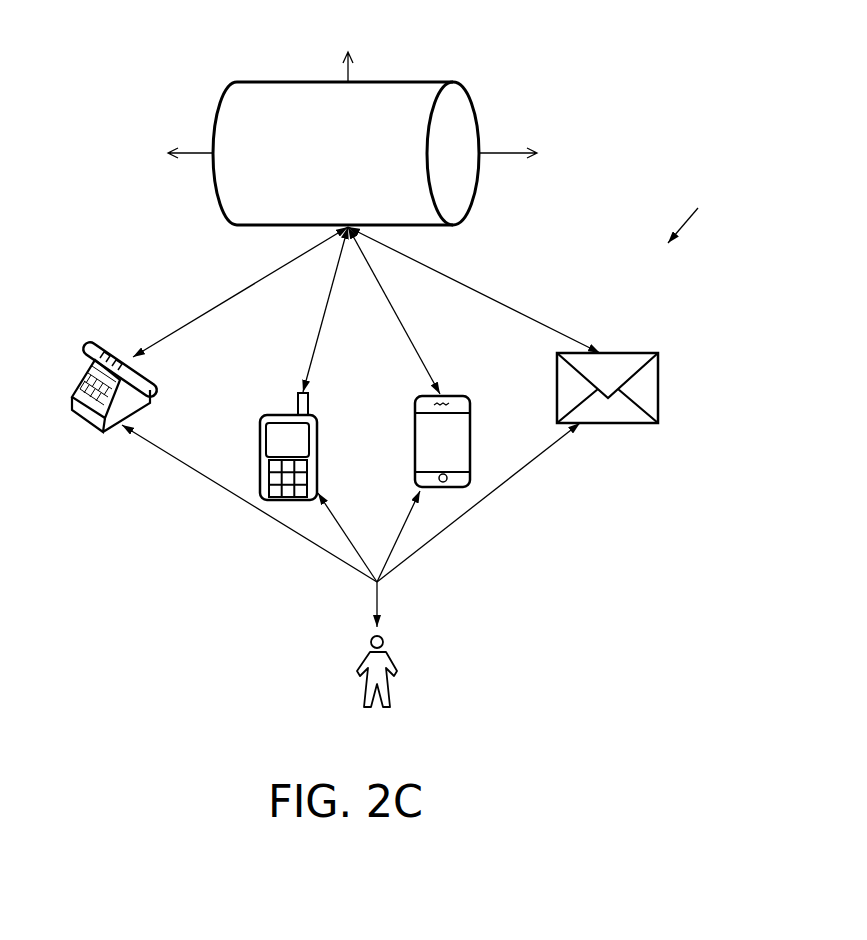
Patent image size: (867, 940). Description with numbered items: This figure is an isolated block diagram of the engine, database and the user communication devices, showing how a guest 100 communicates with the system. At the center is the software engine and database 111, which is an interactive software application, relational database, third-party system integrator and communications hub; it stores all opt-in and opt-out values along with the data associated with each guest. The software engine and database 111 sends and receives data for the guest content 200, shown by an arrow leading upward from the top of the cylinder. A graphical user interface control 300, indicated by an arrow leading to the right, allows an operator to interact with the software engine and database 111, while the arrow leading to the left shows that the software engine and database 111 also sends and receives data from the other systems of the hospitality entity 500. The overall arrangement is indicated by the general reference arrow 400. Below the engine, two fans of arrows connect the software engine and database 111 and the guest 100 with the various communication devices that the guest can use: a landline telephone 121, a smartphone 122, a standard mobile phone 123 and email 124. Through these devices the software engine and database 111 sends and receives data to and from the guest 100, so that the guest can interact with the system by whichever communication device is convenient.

The guest 100 is at (408, 643).
The software engine and database 111 is at (231, 83).
The landline telephone 121 is at (102, 338).
The smartphone 122 is at (277, 415).
The standard mobile phone 123 is at (422, 397).
The email 124 is at (560, 353).
The guest content 200 is at (346, 52).
The graphical user interface control 300 is at (532, 155).
The communication system 400 is at (702, 213).
The other systems of the hospitality entity 500 is at (161, 155).